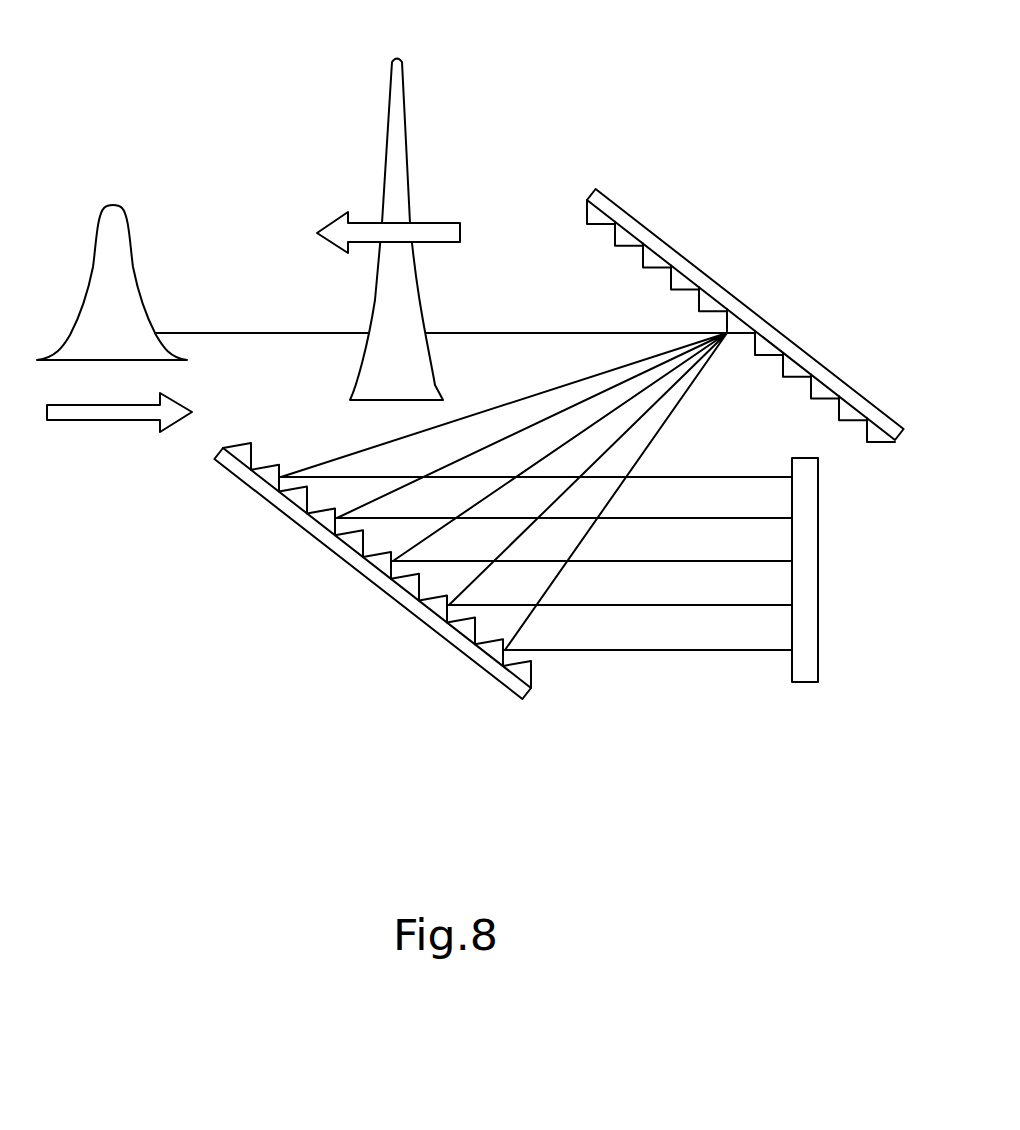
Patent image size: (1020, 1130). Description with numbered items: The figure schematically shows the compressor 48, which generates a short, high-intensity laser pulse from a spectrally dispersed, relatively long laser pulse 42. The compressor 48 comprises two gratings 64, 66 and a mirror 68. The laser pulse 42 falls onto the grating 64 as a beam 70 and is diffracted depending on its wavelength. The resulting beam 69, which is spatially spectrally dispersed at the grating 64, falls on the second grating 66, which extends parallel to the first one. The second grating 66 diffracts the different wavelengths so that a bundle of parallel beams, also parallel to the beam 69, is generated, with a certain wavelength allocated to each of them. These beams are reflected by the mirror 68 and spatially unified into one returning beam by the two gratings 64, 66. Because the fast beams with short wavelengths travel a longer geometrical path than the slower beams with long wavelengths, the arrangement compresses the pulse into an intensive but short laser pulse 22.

The compressor 48 is at (293, 110).
The laser pulse 22 is at (410, 163).
The laser pulse 42 is at (133, 263).
The grating 64 is at (657, 225).
The second grating 66 is at (328, 552).
The mirror 68 is at (819, 583).
The beam 69 is at (520, 400).
The beam 70 is at (273, 333).